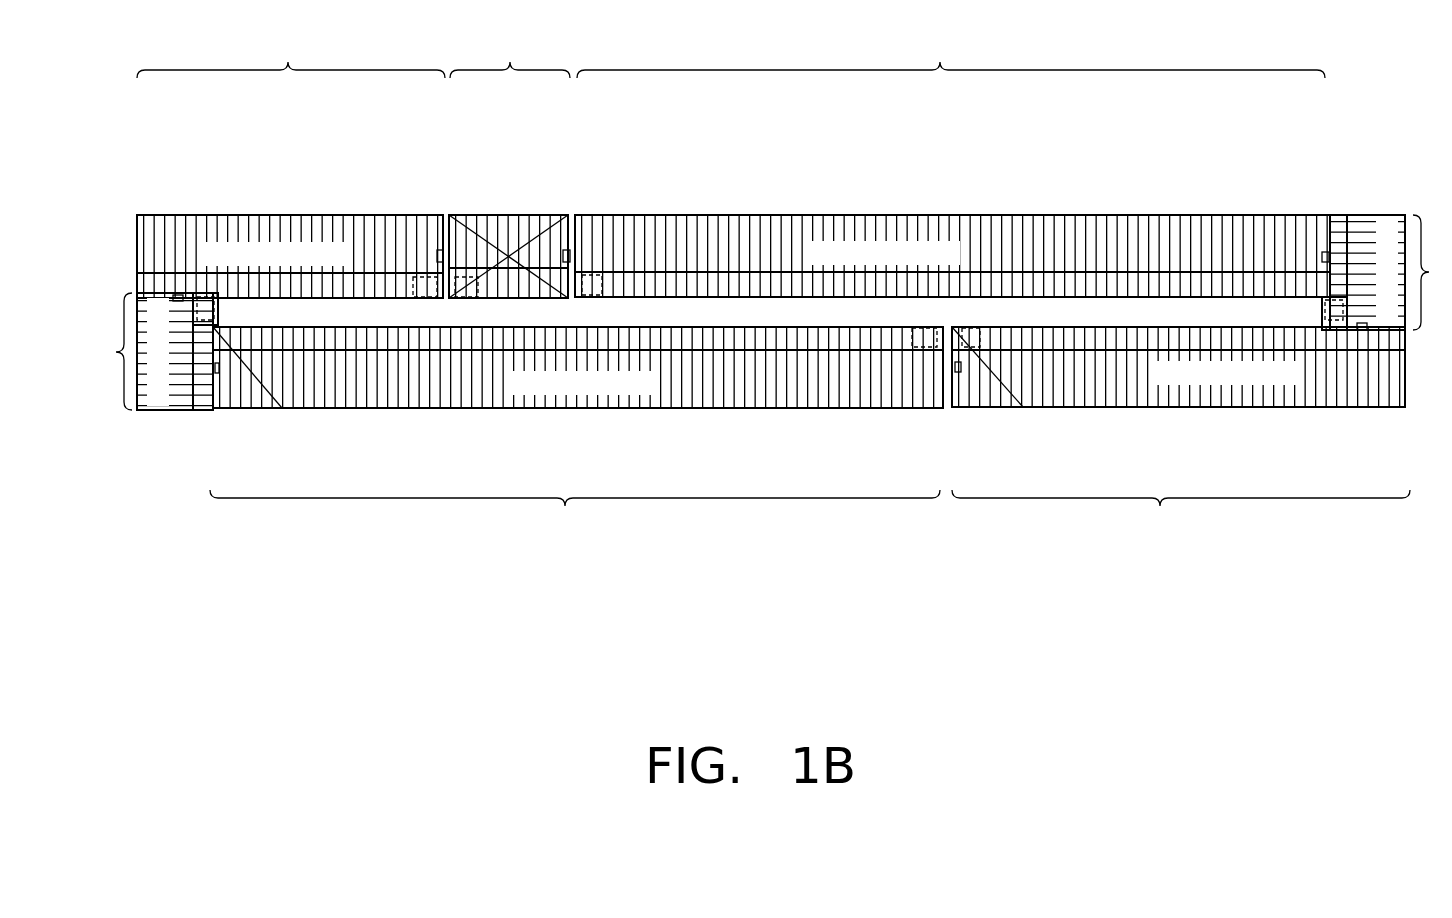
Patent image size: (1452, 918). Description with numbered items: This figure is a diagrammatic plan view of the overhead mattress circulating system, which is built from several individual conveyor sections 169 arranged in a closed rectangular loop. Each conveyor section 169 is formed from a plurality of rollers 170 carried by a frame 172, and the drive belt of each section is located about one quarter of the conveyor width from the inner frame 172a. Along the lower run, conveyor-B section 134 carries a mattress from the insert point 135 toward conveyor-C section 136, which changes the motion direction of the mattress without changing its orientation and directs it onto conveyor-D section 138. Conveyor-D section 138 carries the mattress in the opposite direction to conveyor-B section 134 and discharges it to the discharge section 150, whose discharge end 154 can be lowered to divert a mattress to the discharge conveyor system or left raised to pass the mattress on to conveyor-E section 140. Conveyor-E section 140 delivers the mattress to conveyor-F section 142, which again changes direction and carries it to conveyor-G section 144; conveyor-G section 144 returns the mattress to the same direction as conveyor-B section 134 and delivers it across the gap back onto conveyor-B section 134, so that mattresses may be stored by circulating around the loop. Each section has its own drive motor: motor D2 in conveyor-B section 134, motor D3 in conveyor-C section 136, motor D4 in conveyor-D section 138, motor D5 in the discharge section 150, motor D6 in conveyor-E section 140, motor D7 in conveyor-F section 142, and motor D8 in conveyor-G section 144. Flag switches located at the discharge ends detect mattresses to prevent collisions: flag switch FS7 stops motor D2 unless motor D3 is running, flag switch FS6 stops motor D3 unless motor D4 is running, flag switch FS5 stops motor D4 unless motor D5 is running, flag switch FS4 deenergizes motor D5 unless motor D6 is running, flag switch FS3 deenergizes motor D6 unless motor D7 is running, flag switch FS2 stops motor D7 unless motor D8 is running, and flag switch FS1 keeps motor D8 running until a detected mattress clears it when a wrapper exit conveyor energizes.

The conveyor-B section 134 is at (814, 407).
The conveyor B inlet end 135 is at (203, 410).
The conveyor-C section 136 is at (196, 432).
The conveyor-D section 138 is at (272, 205).
The conveyor-E section 140 is at (1001, 214).
The conveyor-F section 142 is at (1330, 205).
The conveyor-G section 144 is at (1202, 408).
The discharge section 150 is at (531, 203).
The discharge end 154 is at (524, 298).
The conveyor sections 169 is at (288, 60).
The rollers 170 is at (342, 230).
The frame 172 is at (787, 298).
The inner frame 172a is at (1200, 298).
The drive motor D2 is at (922, 326).
The drive motor D3 is at (218, 305).
The drive motor D4 is at (425, 297).
The drive motor D5 is at (462, 298).
The drive motor D6 is at (603, 297).
The drive motor D7 is at (1322, 303).
The drive motor D8 is at (970, 327).
The flag switch FS1 is at (957, 378).
The flag switch FS2 is at (1366, 330).
The flag switch FS3 is at (1318, 252).
The flag switch FS4 is at (567, 215).
The flag switch FS5 is at (437, 215).
The flag switch FS6 is at (181, 295).
The flag switch FS7 is at (221, 405).